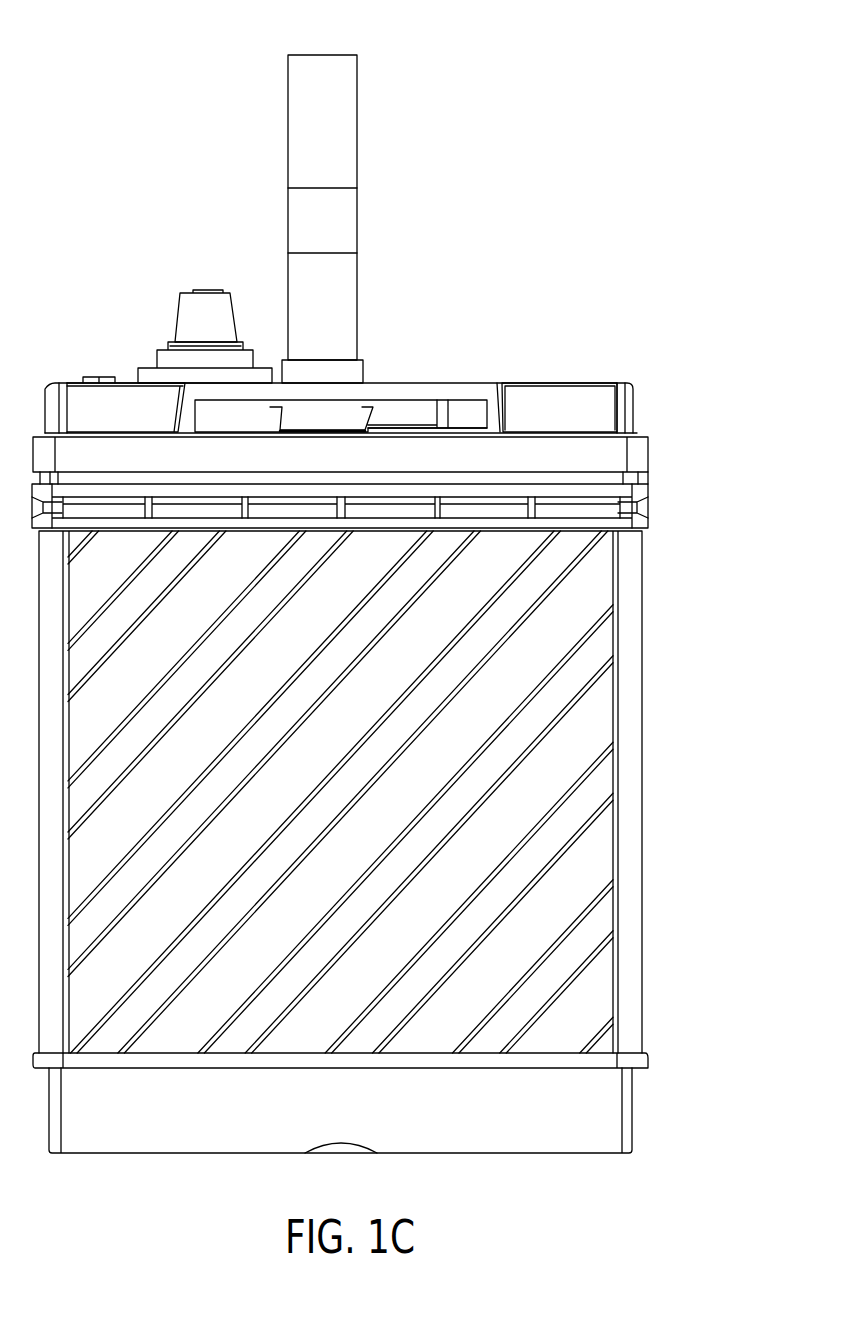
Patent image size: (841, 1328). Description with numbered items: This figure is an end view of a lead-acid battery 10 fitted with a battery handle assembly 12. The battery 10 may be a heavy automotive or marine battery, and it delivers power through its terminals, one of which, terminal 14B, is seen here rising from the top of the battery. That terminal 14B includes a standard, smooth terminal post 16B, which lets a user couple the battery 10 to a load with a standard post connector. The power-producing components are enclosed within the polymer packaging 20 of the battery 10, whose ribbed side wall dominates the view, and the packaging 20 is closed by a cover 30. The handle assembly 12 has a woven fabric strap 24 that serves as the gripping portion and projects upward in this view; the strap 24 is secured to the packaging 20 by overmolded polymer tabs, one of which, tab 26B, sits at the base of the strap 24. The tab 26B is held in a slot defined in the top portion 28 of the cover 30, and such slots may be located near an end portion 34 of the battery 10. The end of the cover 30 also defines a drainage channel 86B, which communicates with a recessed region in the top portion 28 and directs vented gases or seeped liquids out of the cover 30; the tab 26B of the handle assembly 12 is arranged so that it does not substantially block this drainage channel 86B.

The lead-acid battery 10 is at (500, 48).
The battery handle assembly 12 is at (370, 212).
The terminal 14B is at (158, 338).
The terminal post 16B is at (203, 306).
The packaging 20 is at (541, 580).
The woven fabric strap 24 is at (323, 64).
The overmolded polymer tab 26B is at (347, 372).
The top portion 28 is at (500, 378).
The cover 30 is at (597, 408).
The end portion 34 is at (395, 802).
The drainage channel 86B is at (403, 418).